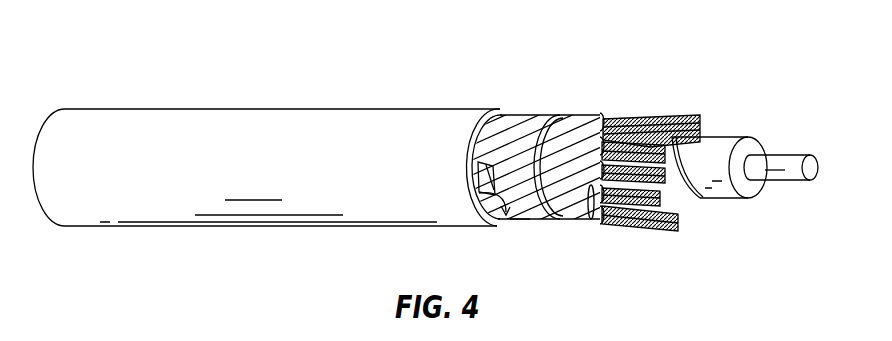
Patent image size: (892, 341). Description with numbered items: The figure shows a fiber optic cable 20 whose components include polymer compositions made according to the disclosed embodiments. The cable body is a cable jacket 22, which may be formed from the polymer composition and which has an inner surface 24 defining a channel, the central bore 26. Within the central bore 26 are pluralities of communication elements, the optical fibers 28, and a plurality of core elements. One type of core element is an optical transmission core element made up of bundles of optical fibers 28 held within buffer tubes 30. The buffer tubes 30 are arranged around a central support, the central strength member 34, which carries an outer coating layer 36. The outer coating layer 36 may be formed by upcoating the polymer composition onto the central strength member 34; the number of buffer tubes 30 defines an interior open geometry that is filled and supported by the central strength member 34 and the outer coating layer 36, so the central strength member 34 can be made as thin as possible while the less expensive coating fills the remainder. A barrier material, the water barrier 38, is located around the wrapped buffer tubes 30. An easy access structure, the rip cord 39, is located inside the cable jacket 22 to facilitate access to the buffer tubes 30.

The fiber optic cable 20 is at (732, 82).
The cable jacket 22 is at (316, 112).
The inner surface 24 is at (494, 224).
The central bore 26 is at (520, 221).
The optical fibers 28 is at (694, 140).
The buffer tubes 30 is at (600, 120).
The central strength member 34 is at (787, 157).
The outer coating layer 36 is at (753, 148).
The water barrier 38 is at (537, 117).
The rip cord 39 is at (475, 161).